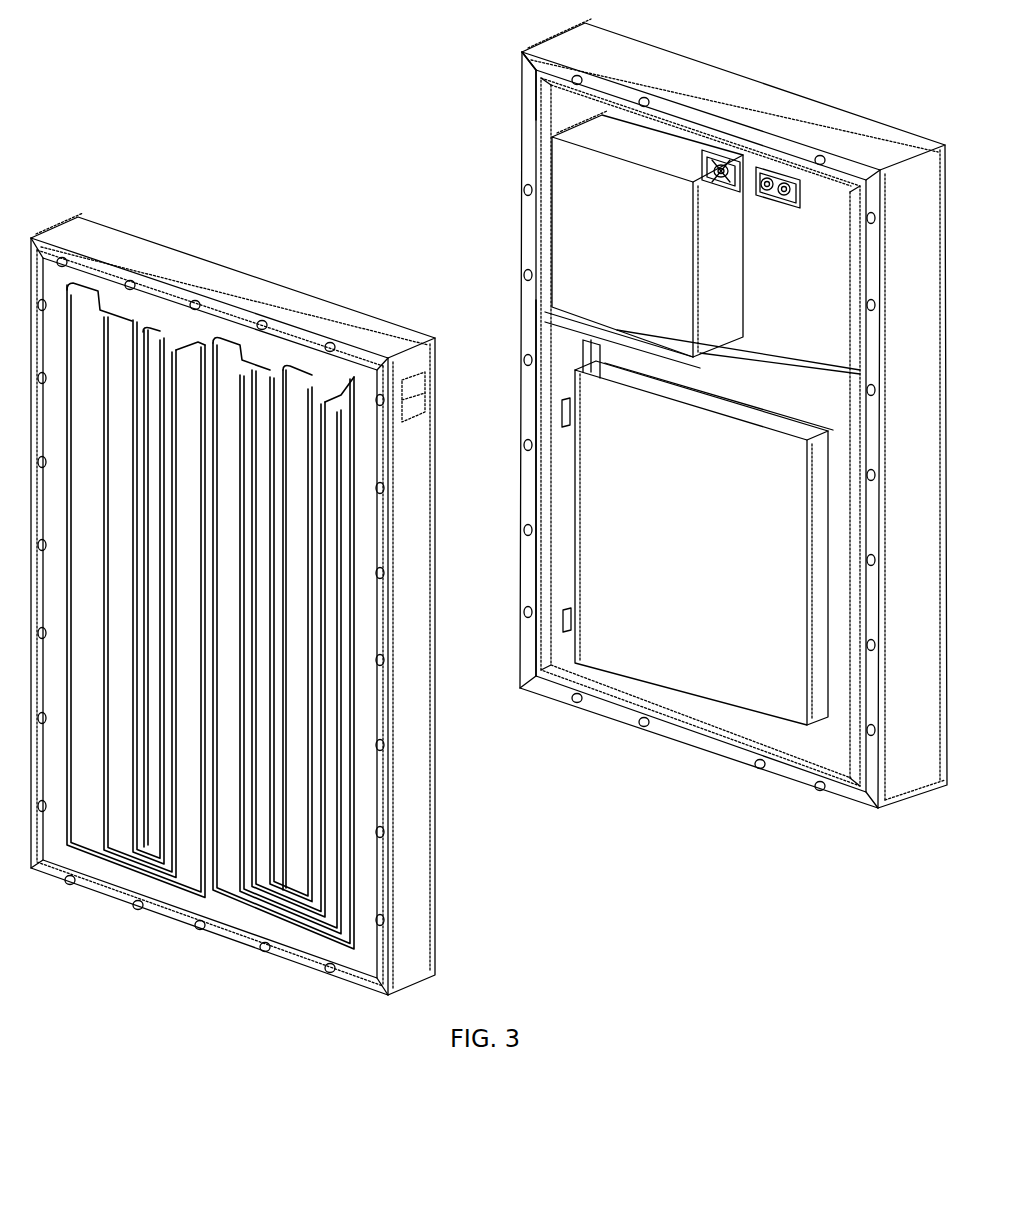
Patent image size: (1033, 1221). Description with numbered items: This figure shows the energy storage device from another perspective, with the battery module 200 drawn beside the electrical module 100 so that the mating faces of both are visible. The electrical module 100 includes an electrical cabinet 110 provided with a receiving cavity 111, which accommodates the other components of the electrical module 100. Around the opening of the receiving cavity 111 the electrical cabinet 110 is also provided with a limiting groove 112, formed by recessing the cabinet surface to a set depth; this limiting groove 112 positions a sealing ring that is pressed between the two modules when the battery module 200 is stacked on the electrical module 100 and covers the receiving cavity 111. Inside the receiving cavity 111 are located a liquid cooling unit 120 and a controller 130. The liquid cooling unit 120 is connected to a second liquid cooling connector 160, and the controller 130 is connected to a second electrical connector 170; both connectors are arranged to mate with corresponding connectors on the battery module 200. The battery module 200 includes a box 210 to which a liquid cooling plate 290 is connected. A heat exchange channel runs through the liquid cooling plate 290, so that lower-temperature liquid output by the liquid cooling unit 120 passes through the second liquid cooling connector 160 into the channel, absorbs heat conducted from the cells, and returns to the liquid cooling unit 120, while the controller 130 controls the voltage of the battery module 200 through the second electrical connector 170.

The electrical module 100 is at (762, 103).
The electrical cabinet 110 is at (845, 130).
The receiving cavity 111 is at (568, 580).
The limiting groove 112 is at (540, 93).
The liquid cooling unit 120 is at (640, 637).
The controller 130 is at (715, 330).
The second liquid cooling connector 160 is at (785, 180).
The second electrical connector 170 is at (715, 152).
The battery module 200 is at (134, 256).
The box 210 is at (303, 318).
The liquid cooling plate 290 is at (185, 875).